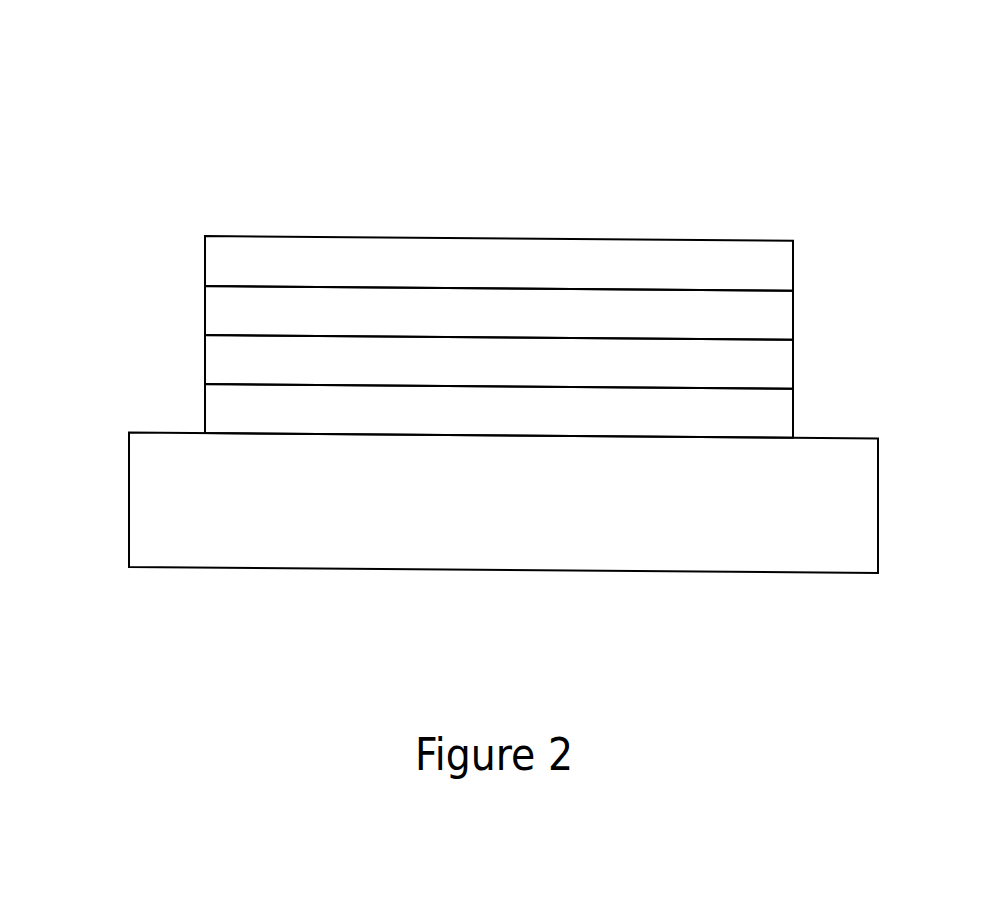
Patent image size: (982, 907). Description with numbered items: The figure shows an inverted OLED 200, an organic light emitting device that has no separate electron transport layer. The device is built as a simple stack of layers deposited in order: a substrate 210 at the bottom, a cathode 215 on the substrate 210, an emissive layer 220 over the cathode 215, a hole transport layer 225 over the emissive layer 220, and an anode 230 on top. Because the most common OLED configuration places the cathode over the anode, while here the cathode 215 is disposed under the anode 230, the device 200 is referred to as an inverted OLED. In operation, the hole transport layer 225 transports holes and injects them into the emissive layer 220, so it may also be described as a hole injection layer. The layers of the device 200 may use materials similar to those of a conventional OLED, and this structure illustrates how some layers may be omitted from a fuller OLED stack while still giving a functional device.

The inverted OLED 200 is at (411, 124).
The substrate 210 is at (502, 570).
The cathode 215 is at (205, 409).
The emissive layer 220 is at (205, 359).
The hole transport layer 225 is at (205, 311).
The anode 230 is at (205, 262).